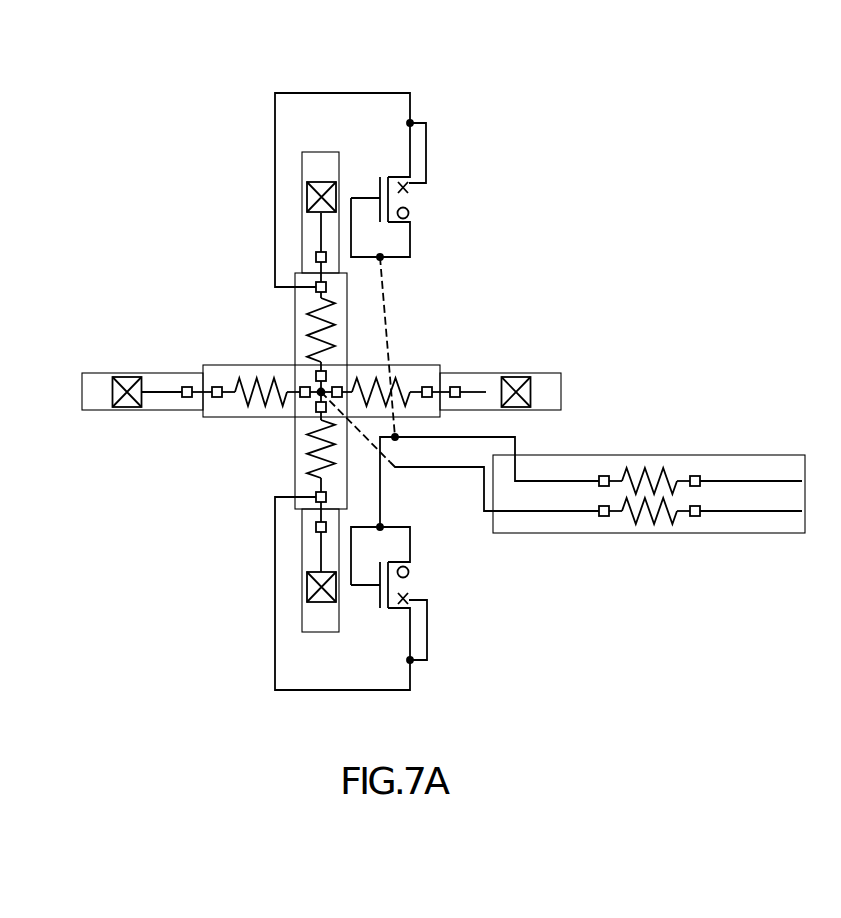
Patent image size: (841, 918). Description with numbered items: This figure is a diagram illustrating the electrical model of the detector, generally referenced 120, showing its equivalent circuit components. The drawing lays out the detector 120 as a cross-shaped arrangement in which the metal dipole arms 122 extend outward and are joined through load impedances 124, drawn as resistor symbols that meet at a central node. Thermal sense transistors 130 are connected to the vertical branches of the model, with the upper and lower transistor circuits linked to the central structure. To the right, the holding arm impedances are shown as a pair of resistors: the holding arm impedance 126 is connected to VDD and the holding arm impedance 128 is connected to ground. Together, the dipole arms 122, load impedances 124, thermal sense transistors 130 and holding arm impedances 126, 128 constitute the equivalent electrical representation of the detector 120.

The detector 120 is at (532, 211).
The metal dipole arms 122 is at (318, 163).
The load impedances 124 is at (315, 335).
The holding arm impedance connected to VDD 126 is at (650, 478).
The holding arm impedance connected to ground 128 is at (658, 515).
The thermal sense transistors 130 is at (400, 610).